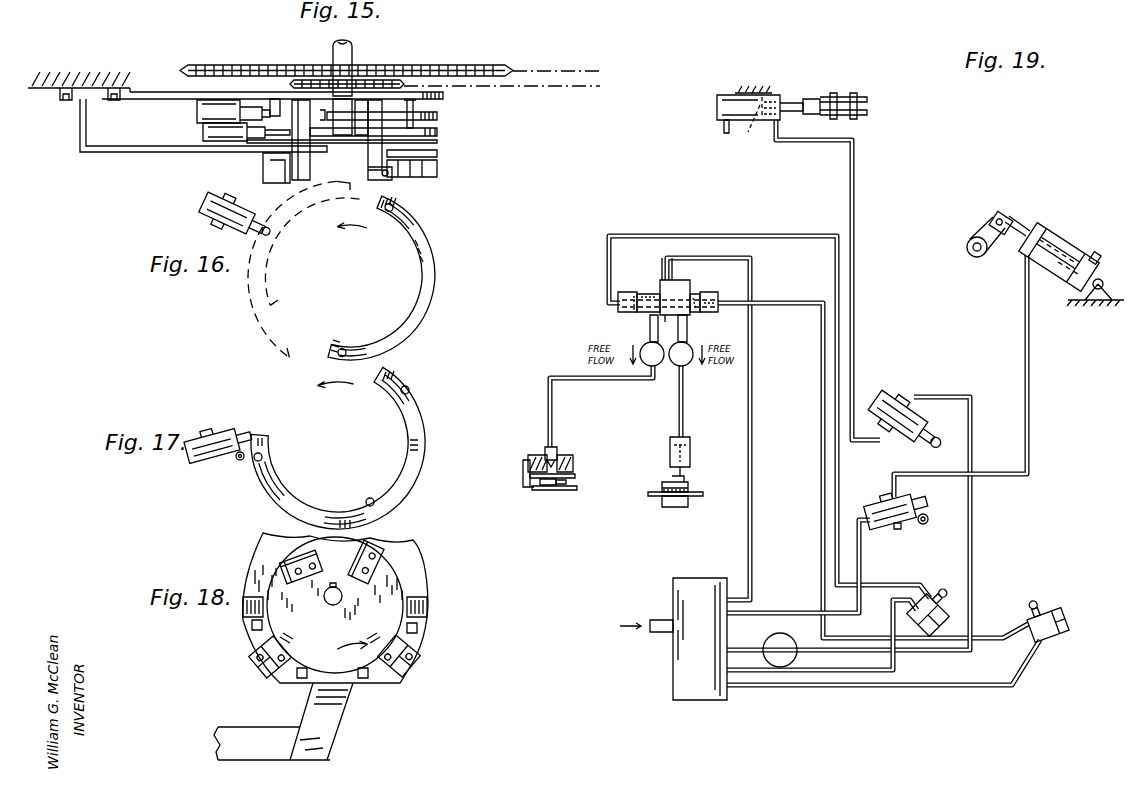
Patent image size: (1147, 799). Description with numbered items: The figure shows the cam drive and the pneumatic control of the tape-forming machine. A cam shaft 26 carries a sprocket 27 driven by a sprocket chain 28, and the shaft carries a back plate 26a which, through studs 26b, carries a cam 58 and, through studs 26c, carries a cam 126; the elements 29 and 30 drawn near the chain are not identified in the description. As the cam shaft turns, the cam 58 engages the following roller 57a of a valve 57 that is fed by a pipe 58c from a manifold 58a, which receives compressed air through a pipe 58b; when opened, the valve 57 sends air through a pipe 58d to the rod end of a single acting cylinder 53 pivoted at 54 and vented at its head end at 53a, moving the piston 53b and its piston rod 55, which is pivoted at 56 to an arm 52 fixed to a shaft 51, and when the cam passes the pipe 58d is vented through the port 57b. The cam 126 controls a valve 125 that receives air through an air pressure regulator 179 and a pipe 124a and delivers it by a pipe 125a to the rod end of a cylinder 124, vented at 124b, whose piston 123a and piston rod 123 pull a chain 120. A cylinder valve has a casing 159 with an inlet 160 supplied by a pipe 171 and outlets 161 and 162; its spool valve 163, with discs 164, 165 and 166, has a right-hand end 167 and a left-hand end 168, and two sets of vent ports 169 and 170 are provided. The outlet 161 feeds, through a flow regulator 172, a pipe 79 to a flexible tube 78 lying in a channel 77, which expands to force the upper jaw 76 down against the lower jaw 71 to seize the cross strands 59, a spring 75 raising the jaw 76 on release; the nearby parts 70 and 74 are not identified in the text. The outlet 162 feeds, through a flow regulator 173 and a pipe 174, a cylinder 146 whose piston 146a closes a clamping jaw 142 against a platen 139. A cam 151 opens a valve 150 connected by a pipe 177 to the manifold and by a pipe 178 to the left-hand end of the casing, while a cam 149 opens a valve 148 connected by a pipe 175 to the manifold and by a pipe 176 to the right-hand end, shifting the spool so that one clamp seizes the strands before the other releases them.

In FIG. 15, the cam shaft 26 is at (352, 54).
In FIG. 18, the cam shaft 26 is at (342, 598).
In FIG. 15, the back plate 26a is at (444, 96).
In FIG. 18, the back plate 26a is at (428, 570).
In FIG. 15, the studs 26b is at (439, 132).
In FIG. 17, the studs 26b is at (409, 390).
In FIG. 15, the studs 26c is at (355, 130).
In FIG. 16, the studs 26c is at (393, 207).
In FIG. 15, the sprocket 27 is at (438, 66).
In FIG. 15, the sprocket chain 28 is at (556, 70).
In FIG. 15, the chain 29 is at (322, 78).
In FIG. 15, the chain run 30 is at (560, 87).
In FIG. 19, the shaft 51 is at (967, 250).
In FIG. 19, the arm 52 is at (986, 228).
In FIG. 19, the single acting cylinder 53 is at (1058, 233).
In FIG. 19, the vent 53a is at (1100, 257).
In FIG. 19, the piston 53b is at (1080, 271).
In FIG. 19, the pivot 54 is at (1106, 288).
In FIG. 19, the piston rod 55 is at (1028, 226).
In FIG. 19, the pivot connection 56 is at (999, 214).
In FIG. 15, the valve 57 is at (202, 133).
In FIG. 17, the valve 57 is at (228, 432).
In FIG. 19, the valve 57 is at (880, 502).
In FIG. 17, the following roller 57a is at (238, 460).
In FIG. 19, the following roller 57a is at (928, 517).
In FIG. 19, the port 57b is at (901, 530).
In FIG. 15, the cam 58 is at (440, 141).
In FIG. 17, the cam 58 is at (424, 440).
In FIG. 19, the manifold 58a is at (688, 602).
In FIG. 19, the pipe 58b is at (660, 632).
In FIG. 19, the pipe 58c is at (861, 550).
In FIG. 19, the pipe 58d is at (1030, 350).
In FIG. 19, the cross strands 59 is at (655, 498).
In FIG. 19, the bracket 70 is at (523, 482).
In FIG. 19, the lower jaw 71 is at (575, 489).
In FIG. 19, the pad 74 is at (542, 485).
In FIG. 19, the spring 75 is at (558, 486).
In FIG. 19, the upper jaw 76 is at (575, 476).
In FIG. 19, the channel 77 is at (573, 460).
In FIG. 19, the flexible tube 78 is at (556, 456).
In FIG. 19, the pipe 79 is at (552, 420).
In FIG. 19, the chain 120 is at (862, 94).
In FIG. 19, the piston rod 123 is at (798, 100).
In FIG. 19, the piston 123a is at (747, 129).
In FIG. 19, the cylinder 124 is at (716, 104).
In FIG. 19, the pipe 124a is at (972, 540).
In FIG. 19, the vent 124b is at (722, 128).
In FIG. 15, the valve 125 is at (196, 110).
In FIG. 16, the valve 125 is at (205, 210).
In FIG. 19, the valve 125 is at (902, 385).
In FIG. 19, the pipe 125a is at (855, 200).
In FIG. 15, the cam 126 is at (439, 116).
In FIG. 16, the cam 126 is at (432, 262).
In FIG. 19, the platen 139 is at (686, 504).
In FIG. 19, the clamping jaw 142 is at (686, 484).
In FIG. 19, the cylinder 146 is at (686, 440).
In FIG. 19, the piston 146a is at (690, 450).
In FIG. 15, the valve 148 is at (438, 170).
In FIG. 18, the valve 148 is at (418, 660).
In FIG. 19, the valve 148 is at (1050, 640).
In FIG. 15, the cam 149 is at (380, 180).
In FIG. 18, the cam 149 is at (378, 560).
In FIG. 15, the valve 150 is at (262, 171).
In FIG. 18, the valve 150 is at (256, 668).
In FIG. 19, the valve 150 is at (921, 600).
In FIG. 15, the cam 151 is at (304, 167).
In FIG. 18, the cam 151 is at (283, 552).
In FIG. 19, the valve casing 159 is at (692, 292).
In FIG. 19, the inlet 160 is at (718, 305).
In FIG. 19, the outlet 161 is at (649, 330).
In FIG. 19, the outlet 162 is at (687, 330).
In FIG. 19, the spool valve 163 is at (700, 298).
In FIG. 19, the disc 164 is at (695, 293).
In FIG. 19, the disc 165 is at (646, 313).
In FIG. 19, the disc 166 is at (636, 295).
In FIG. 19, the right-hand end of spool valve 167 is at (718, 303).
In FIG. 19, the left-hand end of spool valve 168 is at (616, 308).
In FIG. 19, the vent ports 169 is at (668, 283).
In FIG. 19, the vent ports 170 is at (648, 296).
In FIG. 19, the pipe 171 is at (752, 470).
In FIG. 19, the flow regulator 172 is at (657, 365).
In FIG. 19, the flow regulator 173 is at (686, 364).
In FIG. 19, the pipe 174 is at (683, 410).
In FIG. 19, the pipe 175 is at (968, 688).
In FIG. 19, the pipe 176 is at (990, 635).
In FIG. 19, the pipe 177 is at (897, 665).
In FIG. 19, the pipe 178 is at (840, 460).
In FIG. 19, the air pressure regulator 179 is at (769, 640).